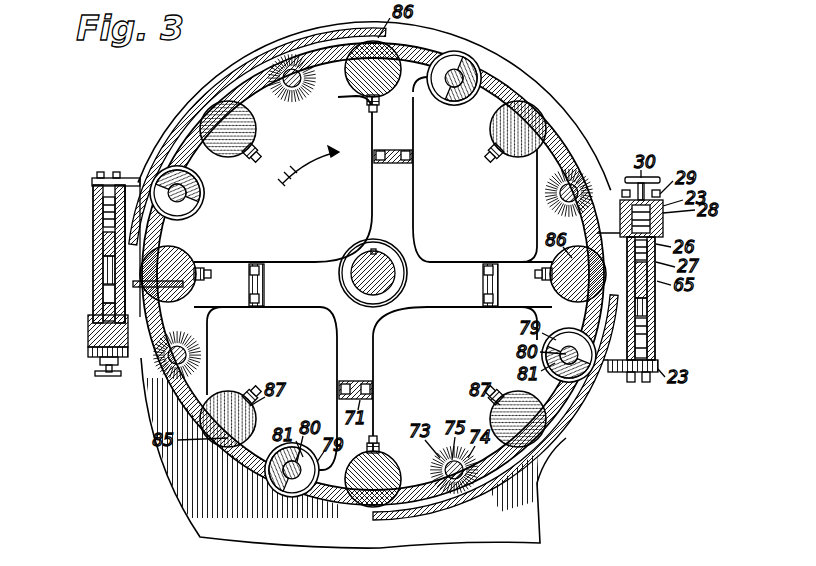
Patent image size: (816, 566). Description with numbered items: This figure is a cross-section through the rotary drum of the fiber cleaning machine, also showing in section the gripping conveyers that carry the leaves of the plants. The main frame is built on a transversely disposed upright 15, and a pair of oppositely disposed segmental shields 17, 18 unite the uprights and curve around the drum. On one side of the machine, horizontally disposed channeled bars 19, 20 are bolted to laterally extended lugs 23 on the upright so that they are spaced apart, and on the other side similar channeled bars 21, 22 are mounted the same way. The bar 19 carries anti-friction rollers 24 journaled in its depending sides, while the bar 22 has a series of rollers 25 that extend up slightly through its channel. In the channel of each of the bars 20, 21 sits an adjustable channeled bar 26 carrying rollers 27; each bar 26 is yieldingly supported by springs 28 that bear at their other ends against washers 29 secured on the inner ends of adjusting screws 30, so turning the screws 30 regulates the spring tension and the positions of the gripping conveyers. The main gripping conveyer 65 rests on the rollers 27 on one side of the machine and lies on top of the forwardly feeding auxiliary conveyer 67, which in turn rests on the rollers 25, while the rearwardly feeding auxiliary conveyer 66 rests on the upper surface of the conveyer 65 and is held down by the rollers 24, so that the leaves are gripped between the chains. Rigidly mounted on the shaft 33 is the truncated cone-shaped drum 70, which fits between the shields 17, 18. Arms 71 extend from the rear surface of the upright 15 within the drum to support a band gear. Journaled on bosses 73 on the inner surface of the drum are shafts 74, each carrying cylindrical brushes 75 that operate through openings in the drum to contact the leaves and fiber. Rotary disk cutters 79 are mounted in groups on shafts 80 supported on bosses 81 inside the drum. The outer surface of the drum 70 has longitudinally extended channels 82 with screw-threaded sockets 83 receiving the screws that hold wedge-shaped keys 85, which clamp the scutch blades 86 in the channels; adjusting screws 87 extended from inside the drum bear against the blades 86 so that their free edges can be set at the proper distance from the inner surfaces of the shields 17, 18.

The upright 15 is at (218, 500).
The segmental shield 17 is at (207, 117).
The segmental shield 18 is at (594, 408).
The channeled bar 19 is at (101, 208).
The channeled bar 20 is at (90, 330).
The channeled bar 21 is at (661, 231).
The channeled bar 22 is at (657, 352).
The lug 23 is at (95, 179).
The anti-friction roller 24 is at (106, 214).
The roller 25 is at (657, 325).
The channeled bar 26 is at (99, 296).
The roller 27 is at (98, 309).
The spring 28 is at (105, 366).
The washer 29 is at (99, 360).
The adjusting screw 30 is at (112, 377).
The shaft 33 is at (378, 292).
The main gripping conveyer 65 is at (95, 272).
The rearwardly feeding auxiliary conveyer 66 is at (97, 248).
The forwardly feeding auxiliary conveyer 67 is at (657, 301).
The drum 70 is at (160, 232).
The arm 71 is at (266, 286).
The boss 73 is at (300, 89).
The shaft 74 is at (290, 89).
The cylindrical brush 75 is at (287, 90).
The rotary disk cutter 79 is at (194, 193).
The shaft 80 is at (194, 193).
The boss 81 is at (196, 203).
The channel 82 is at (172, 274).
The screw-threaded socket 83 is at (575, 280).
The wedge-shaped key 85 is at (398, 50).
The scutch blade 86 is at (222, 452).
The adjusting screw 87 is at (497, 137).